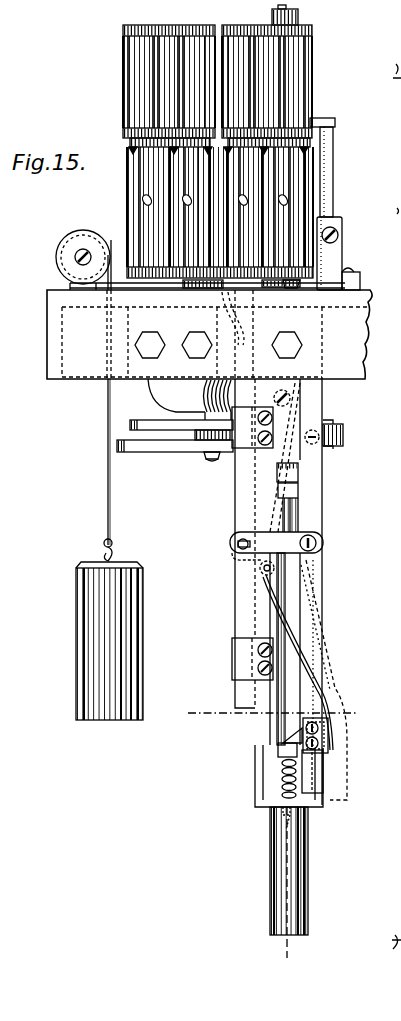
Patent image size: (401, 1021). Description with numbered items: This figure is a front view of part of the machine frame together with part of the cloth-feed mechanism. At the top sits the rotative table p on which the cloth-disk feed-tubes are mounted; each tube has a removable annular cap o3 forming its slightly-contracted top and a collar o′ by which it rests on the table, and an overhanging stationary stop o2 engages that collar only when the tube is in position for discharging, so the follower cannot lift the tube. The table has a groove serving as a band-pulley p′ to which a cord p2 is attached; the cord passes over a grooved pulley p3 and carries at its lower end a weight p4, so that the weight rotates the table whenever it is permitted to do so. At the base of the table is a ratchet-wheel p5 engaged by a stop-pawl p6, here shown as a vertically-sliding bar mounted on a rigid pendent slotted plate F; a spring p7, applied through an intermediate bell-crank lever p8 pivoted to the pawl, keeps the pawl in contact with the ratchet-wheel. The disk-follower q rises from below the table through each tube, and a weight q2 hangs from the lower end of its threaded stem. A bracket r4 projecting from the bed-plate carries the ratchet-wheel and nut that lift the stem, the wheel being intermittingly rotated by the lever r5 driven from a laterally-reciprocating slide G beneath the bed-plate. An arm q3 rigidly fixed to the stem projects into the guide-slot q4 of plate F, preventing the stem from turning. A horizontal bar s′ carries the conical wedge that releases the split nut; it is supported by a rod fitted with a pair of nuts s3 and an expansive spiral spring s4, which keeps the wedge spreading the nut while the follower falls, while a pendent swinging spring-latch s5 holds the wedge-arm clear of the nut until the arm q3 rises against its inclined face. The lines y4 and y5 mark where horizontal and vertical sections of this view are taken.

The annular cap o3 is at (124, 31).
The collar o′ is at (124, 133).
The overhanging stationary stop o2 is at (322, 120).
The grooved pulley p3 is at (82, 230).
The rotative table p is at (126, 275).
The cord p2 is at (148, 289).
The ratchet-wheel p5 is at (200, 289).
The band-pulley p′ is at (262, 289).
The disk-follower q is at (300, 289).
The weight p4 is at (285, 736).
The bracket r4 is at (189, 399).
The lever r5 is at (148, 421).
The slide G is at (160, 452).
The stop-pawl p6 is at (285, 592).
The spring-latch s5 is at (298, 466).
The pendent slotted plate F is at (296, 487).
The horizontal bar s′ is at (300, 491).
The intermediate bell-crank lever p8 is at (318, 580).
The spring p7 is at (318, 676).
The section line y4 is at (263, 709).
The guide-slot q4 is at (262, 713).
The arm q3 is at (285, 758).
The nuts s3 is at (282, 778).
The expansive spiral spring s4 is at (312, 795).
The weight q2 is at (299, 871).
The section line y5 is at (282, 889).